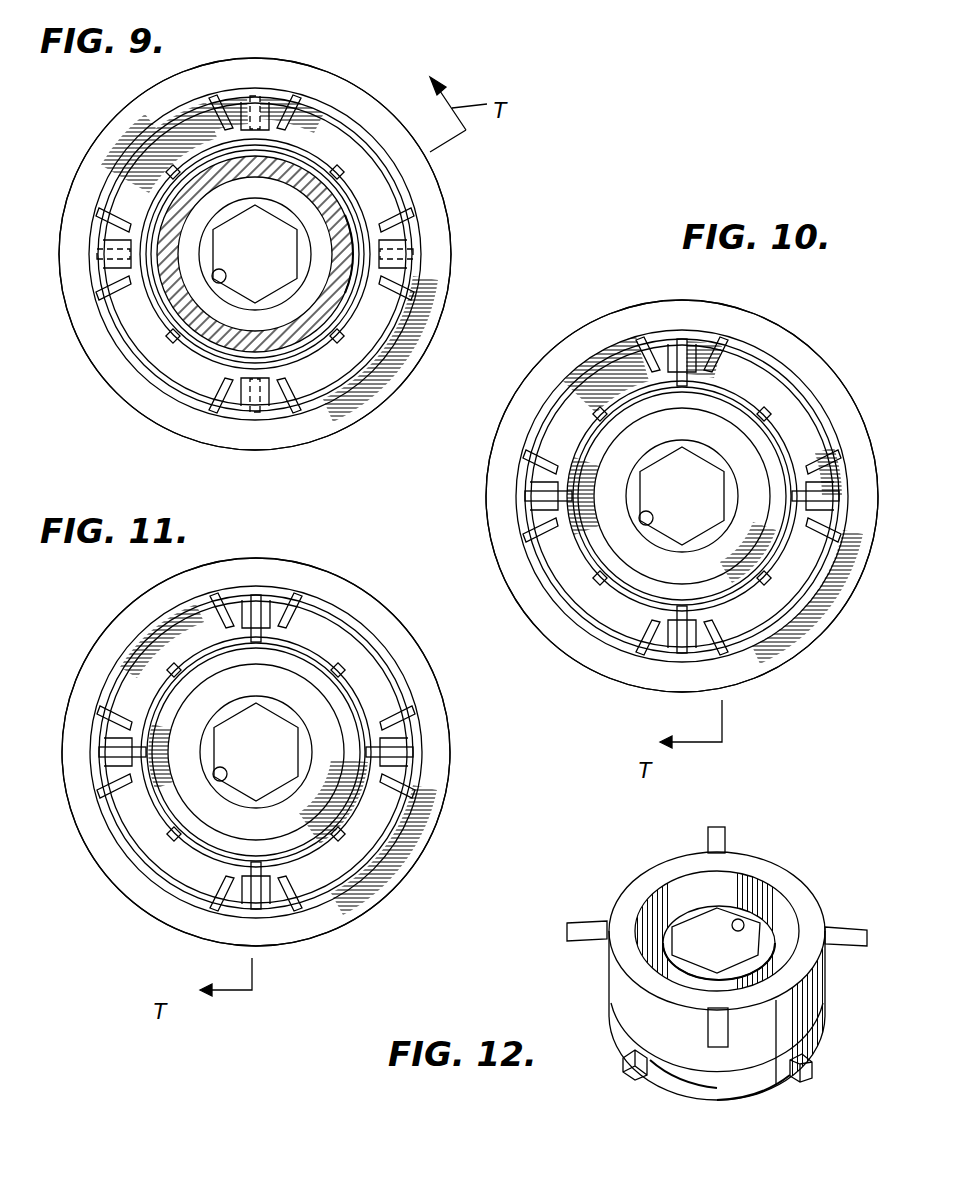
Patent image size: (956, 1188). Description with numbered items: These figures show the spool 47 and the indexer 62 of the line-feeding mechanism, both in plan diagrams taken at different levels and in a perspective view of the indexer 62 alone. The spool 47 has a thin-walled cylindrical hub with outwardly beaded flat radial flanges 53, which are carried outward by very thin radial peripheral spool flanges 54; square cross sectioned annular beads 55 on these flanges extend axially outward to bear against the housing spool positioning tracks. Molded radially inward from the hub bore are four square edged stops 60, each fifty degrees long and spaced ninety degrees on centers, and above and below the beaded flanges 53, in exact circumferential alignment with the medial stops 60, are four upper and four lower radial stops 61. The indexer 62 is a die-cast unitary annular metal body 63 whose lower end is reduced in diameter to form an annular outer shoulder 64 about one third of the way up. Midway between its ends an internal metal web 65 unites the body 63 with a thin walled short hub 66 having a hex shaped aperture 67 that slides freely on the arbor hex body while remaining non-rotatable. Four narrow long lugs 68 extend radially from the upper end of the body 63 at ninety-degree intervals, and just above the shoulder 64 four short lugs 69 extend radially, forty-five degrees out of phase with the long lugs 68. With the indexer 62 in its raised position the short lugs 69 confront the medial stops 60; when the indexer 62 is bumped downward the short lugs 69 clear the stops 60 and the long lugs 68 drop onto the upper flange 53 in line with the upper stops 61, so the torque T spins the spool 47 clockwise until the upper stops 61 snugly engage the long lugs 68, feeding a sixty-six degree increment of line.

In FIG. 9, the spool 47 is at (448, 228).
In FIG. 10, the spool 47 is at (813, 345).
In FIG. 11, the spool 47 is at (124, 890).
In FIG. 9, the outwardly peripherally beaded flat radial flange 53 is at (140, 178).
In FIG. 10, the outwardly peripherally beaded flat radial flange 53 is at (747, 372).
In FIG. 11, the outwardly peripherally beaded flat radial flange 53 is at (162, 667).
In FIG. 9, the very thin radial peripheral spool flange 54 is at (306, 440).
In FIG. 10, the very thin radial peripheral spool flange 54 is at (580, 345).
In FIG. 11, the very thin radial peripheral spool flange 54 is at (143, 597).
In FIG. 9, the square cross sectioned annular bead 55 is at (99, 210).
In FIG. 10, the square cross sectioned annular bead 55 is at (783, 377).
In FIG. 11, the square cross sectioned annular bead 55 is at (160, 637).
In FIG. 9, the square edged stop 60 is at (222, 137).
In FIG. 10, the square edged stop 60 is at (710, 373).
In FIG. 11, the square edged stop 60 is at (248, 625).
In FIG. 9, the upper and lower radial stop 61 is at (185, 130).
In FIG. 10, the upper and lower radial stop 61 is at (653, 360).
In FIG. 11, the upper and lower radial stop 61 is at (275, 612).
In FIG. 9, the indexer 62 is at (210, 352).
In FIG. 10, the indexer 62 is at (628, 592).
In FIG. 11, the indexer 62 is at (193, 840).
In FIG. 12, the indexer 62 is at (604, 987).
In FIG. 9, the unitary annular metal body 63 is at (341, 281).
In FIG. 12, the unitary annular metal body 63 is at (677, 1068).
In FIG. 9, the annular outer shoulder 64 is at (352, 300).
In FIG. 12, the annular outer shoulder 64 is at (720, 1100).
In FIG. 9, the internal metal web 65 is at (282, 184).
In FIG. 12, the internal metal web 65 is at (782, 945).
In FIG. 9, the thin walled short hub 66 is at (212, 262).
In FIG. 10, the thin walled short hub 66 is at (623, 495).
In FIG. 11, the thin walled short hub 66 is at (207, 740).
In FIG. 12, the thin walled short hub 66 is at (692, 910).
In FIG. 9, the hex shaped aperture 67 is at (220, 283).
In FIG. 10, the hex shaped aperture 67 is at (647, 513).
In FIG. 11, the hex shaped aperture 67 is at (223, 777).
In FIG. 12, the hex shaped aperture 67 is at (740, 922).
In FIG. 9, the long lug 68 is at (262, 140).
In FIG. 10, the long lug 68 is at (683, 338).
In FIG. 11, the long lug 68 is at (259, 590).
In FIG. 12, the long lug 68 is at (718, 828).
In FIG. 9, the short lug 69 is at (338, 175).
In FIG. 10, the short lug 69 is at (763, 405).
In FIG. 11, the short lug 69 is at (340, 663).
In FIG. 12, the short lug 69 is at (626, 1070).